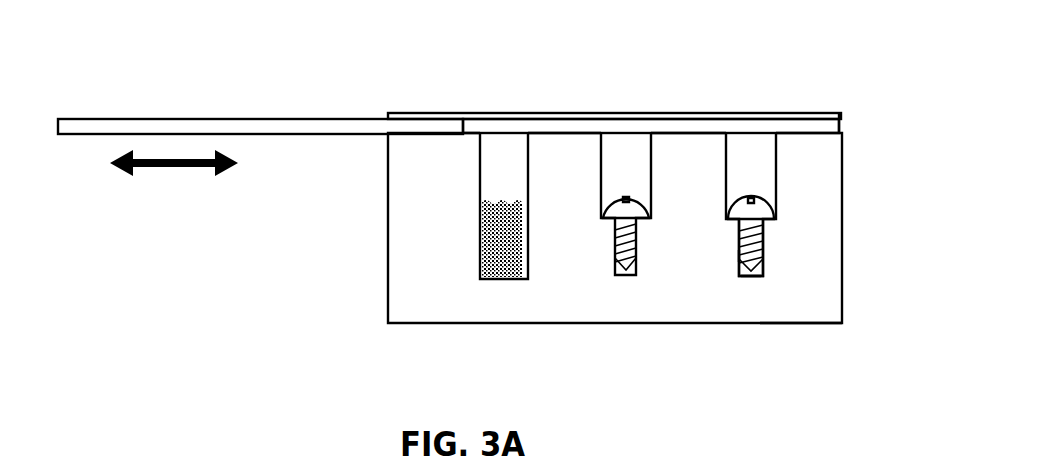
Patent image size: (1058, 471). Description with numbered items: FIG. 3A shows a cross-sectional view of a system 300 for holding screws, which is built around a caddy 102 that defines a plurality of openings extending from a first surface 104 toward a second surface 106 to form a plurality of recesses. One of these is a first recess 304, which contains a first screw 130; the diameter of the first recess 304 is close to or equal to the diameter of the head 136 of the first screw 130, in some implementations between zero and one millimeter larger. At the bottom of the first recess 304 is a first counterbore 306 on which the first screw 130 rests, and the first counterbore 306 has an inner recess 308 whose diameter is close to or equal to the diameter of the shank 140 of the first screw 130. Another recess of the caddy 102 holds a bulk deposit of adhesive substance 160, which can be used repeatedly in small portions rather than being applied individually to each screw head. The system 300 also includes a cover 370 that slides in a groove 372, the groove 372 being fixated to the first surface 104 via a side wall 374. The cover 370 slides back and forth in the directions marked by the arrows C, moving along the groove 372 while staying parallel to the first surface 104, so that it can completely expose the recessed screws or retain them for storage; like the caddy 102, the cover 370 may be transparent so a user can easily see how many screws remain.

The system 300 is at (357, 53).
The caddy 102 is at (387, 212).
The first surface 104 is at (840, 128).
The second surface 106 is at (822, 323).
The first screw 130 is at (760, 222).
The head 136 is at (764, 204).
The shank 140 is at (762, 248).
The adhesive substance 160 is at (495, 262).
The first recess 304 is at (755, 142).
The first counterbore 306 is at (722, 257).
The inner recess 308 is at (747, 290).
The cover 370 is at (150, 122).
The groove 372 is at (572, 128).
The side wall 374 is at (497, 113).
The arrows C is at (181, 195).